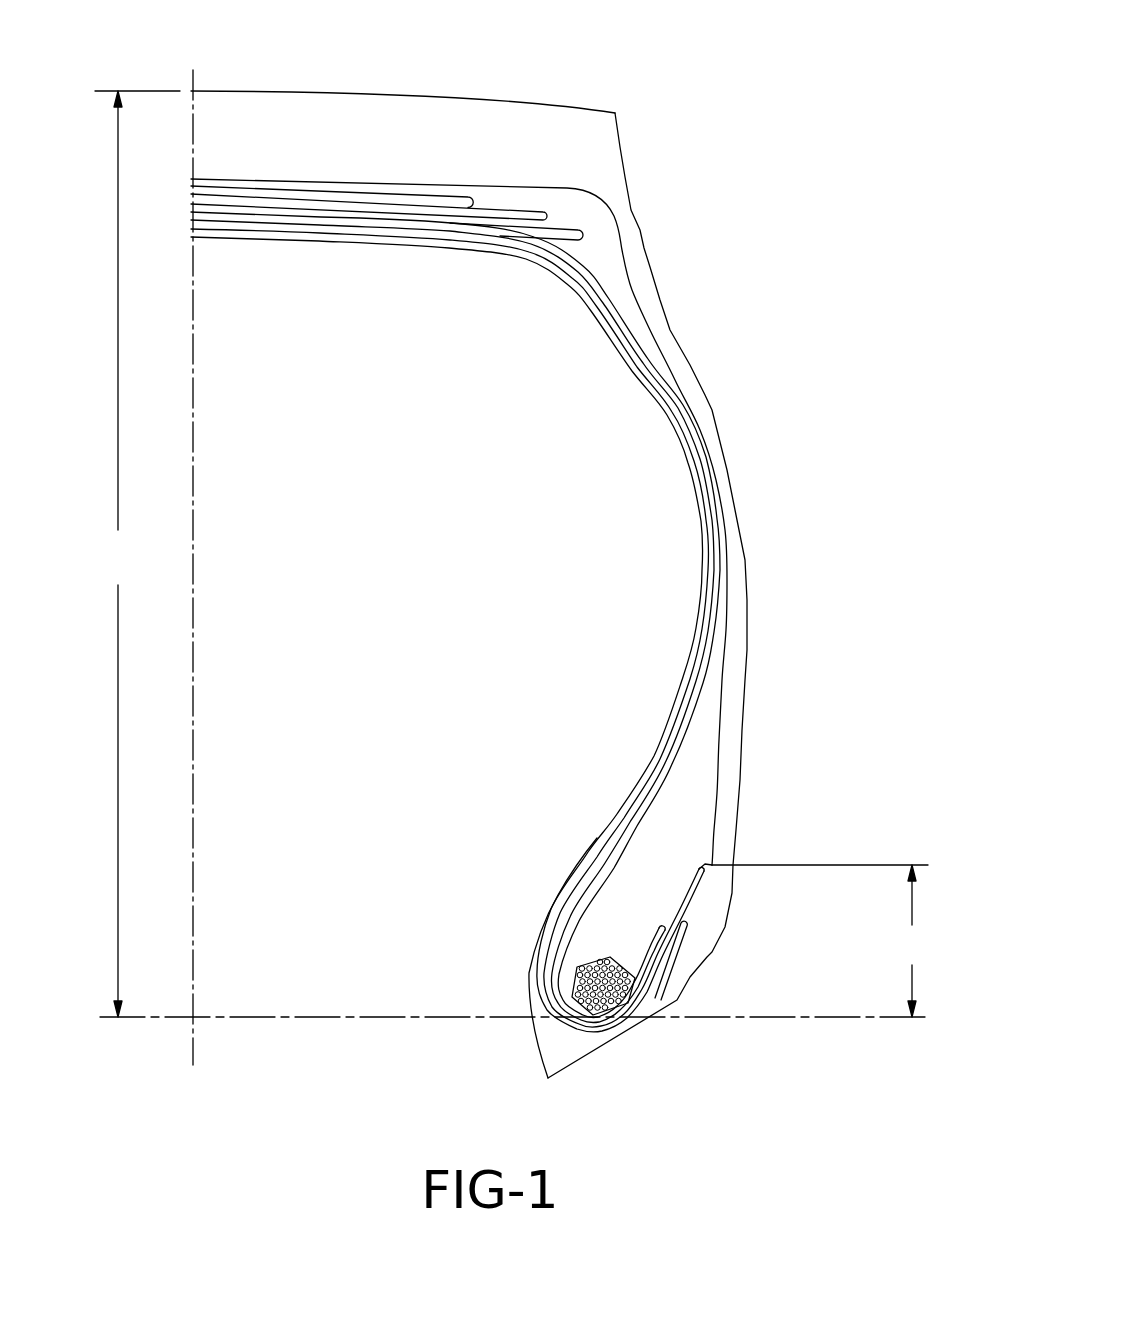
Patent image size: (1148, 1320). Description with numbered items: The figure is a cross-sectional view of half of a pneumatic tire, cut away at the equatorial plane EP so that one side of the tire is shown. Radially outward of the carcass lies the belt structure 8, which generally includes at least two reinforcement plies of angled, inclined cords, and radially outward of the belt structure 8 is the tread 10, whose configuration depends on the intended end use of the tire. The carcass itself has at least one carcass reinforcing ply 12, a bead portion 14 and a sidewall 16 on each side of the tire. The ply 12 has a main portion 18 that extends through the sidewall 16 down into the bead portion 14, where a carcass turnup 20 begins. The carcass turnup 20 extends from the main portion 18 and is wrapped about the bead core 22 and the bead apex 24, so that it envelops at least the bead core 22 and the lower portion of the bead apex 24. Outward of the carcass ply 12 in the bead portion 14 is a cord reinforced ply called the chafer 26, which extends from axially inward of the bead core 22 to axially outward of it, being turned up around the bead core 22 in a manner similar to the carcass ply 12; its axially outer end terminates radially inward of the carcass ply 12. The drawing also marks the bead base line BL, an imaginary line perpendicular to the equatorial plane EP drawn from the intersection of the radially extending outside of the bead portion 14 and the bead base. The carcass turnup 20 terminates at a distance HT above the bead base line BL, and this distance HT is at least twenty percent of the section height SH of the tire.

The belt structure 8 is at (220, 202).
The tread 10 is at (355, 92).
The carcass reinforcing ply 12 is at (703, 452).
The bead portion 14 is at (488, 967).
The sidewall 16 is at (738, 558).
The main portion 18 is at (713, 640).
The carcass turnup 20 is at (668, 912).
The bead core 22 is at (615, 993).
The bead apex 24 is at (695, 750).
The chafer 26 is at (677, 943).
The equatorial plane EP is at (194, 484).
The section height SH is at (137, 554).
The bead base line BL is at (745, 1018).
The turnup height HT is at (823, 941).